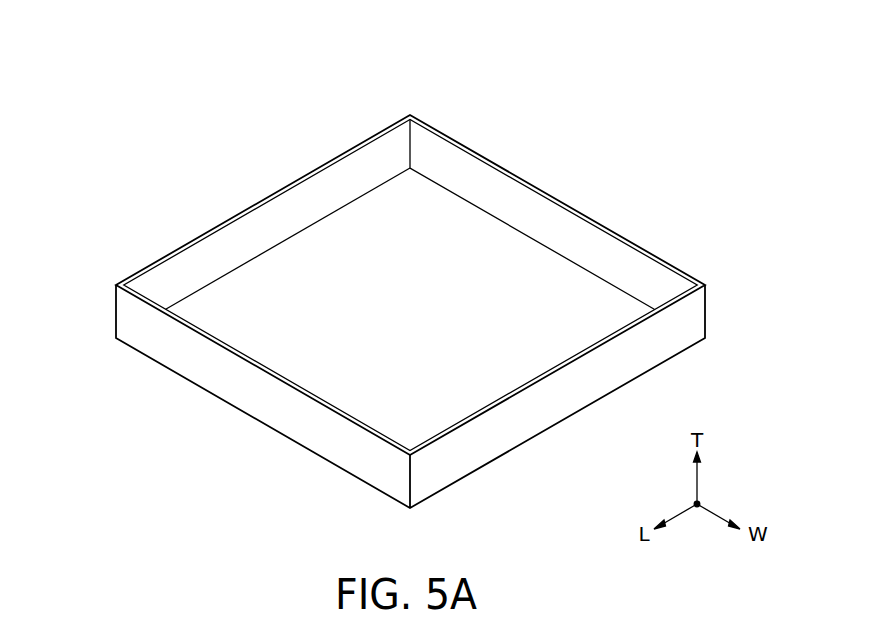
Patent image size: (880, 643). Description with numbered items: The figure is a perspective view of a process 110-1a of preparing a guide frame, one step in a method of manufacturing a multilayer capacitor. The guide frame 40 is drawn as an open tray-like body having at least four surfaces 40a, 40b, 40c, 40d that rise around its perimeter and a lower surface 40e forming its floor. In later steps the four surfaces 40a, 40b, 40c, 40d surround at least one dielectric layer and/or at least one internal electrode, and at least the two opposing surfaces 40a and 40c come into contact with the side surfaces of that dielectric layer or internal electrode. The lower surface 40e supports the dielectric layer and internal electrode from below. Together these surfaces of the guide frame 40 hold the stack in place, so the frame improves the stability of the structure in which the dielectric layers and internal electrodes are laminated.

The process of preparing a guide frame 110-1a is at (290, 36).
The guide frame 40 is at (730, 73).
The surface 40a is at (700, 313).
The surface 40b is at (597, 252).
The surface 40c is at (225, 252).
The surface 40d is at (120, 315).
The lower surface 40e is at (513, 267).